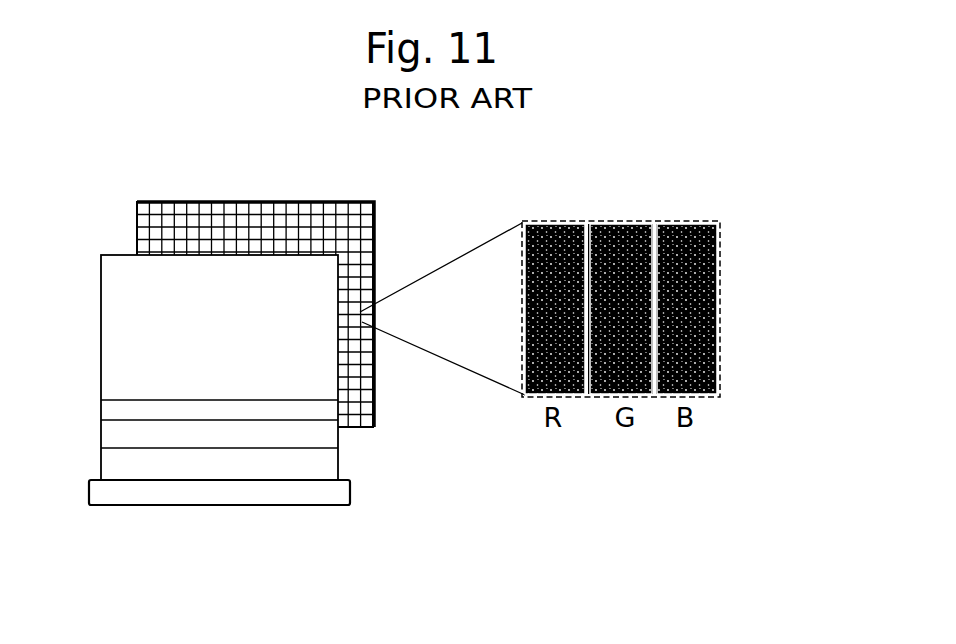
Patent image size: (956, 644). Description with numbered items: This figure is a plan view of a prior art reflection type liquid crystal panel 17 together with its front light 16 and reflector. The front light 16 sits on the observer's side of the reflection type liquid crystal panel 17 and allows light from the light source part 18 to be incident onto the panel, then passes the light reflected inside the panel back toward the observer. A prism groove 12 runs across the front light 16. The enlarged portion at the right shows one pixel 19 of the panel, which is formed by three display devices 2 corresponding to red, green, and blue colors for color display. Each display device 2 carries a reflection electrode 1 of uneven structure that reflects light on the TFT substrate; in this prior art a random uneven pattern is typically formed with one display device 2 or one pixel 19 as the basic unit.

The reflection electrode 1 is at (674, 220).
The display device 2 is at (715, 340).
The prism groove 12 is at (278, 400).
The front light 16 is at (104, 357).
The reflection type liquid crystal panel 17 is at (166, 222).
The light source part 18 is at (200, 500).
The pixel 19 is at (720, 245).